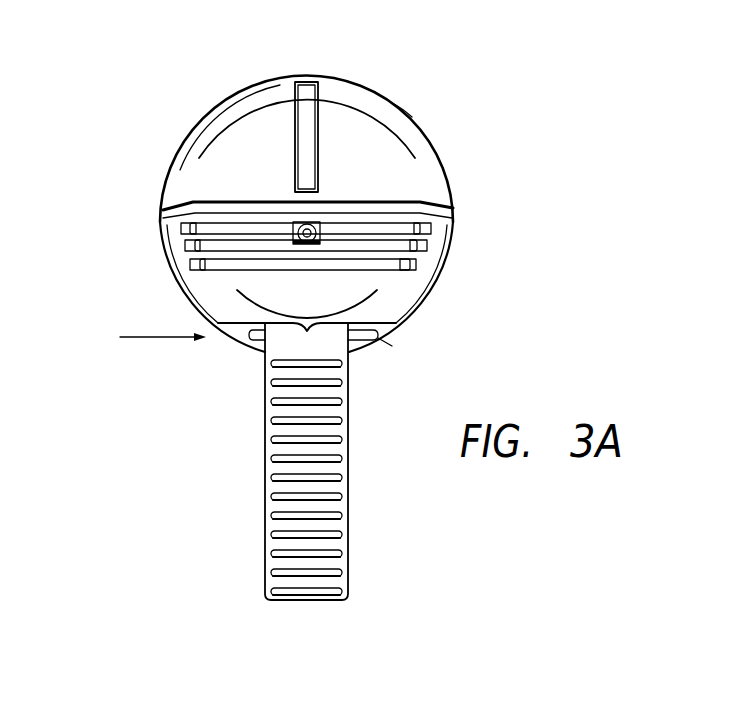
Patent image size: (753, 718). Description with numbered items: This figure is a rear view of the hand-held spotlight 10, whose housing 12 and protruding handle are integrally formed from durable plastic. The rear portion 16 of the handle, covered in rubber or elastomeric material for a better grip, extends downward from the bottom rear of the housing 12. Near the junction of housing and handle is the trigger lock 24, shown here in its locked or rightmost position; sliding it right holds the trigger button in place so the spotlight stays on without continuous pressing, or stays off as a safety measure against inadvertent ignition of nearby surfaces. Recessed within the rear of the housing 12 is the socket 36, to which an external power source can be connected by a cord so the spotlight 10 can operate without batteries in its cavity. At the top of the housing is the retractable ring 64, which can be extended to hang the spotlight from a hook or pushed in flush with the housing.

The hand-held spotlight 10 is at (113, 108).
The housing 12 is at (453, 190).
The rear portion of the handle 16 is at (340, 601).
The trigger lock 24 is at (380, 335).
The socket 36 is at (293, 232).
The retractable ring 64 is at (307, 82).